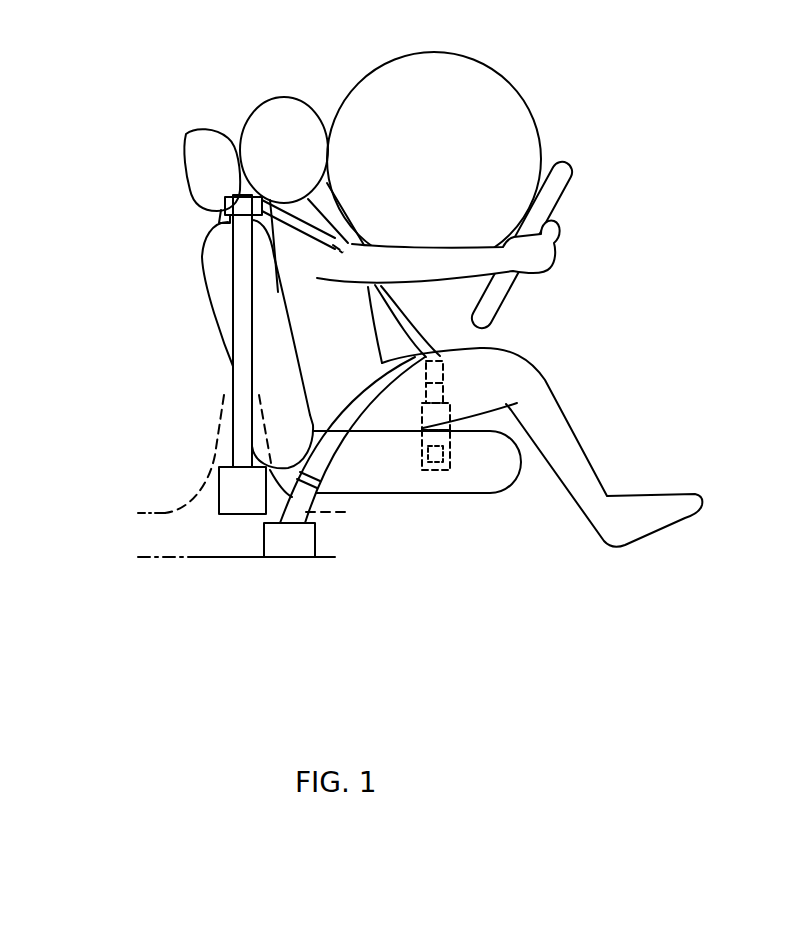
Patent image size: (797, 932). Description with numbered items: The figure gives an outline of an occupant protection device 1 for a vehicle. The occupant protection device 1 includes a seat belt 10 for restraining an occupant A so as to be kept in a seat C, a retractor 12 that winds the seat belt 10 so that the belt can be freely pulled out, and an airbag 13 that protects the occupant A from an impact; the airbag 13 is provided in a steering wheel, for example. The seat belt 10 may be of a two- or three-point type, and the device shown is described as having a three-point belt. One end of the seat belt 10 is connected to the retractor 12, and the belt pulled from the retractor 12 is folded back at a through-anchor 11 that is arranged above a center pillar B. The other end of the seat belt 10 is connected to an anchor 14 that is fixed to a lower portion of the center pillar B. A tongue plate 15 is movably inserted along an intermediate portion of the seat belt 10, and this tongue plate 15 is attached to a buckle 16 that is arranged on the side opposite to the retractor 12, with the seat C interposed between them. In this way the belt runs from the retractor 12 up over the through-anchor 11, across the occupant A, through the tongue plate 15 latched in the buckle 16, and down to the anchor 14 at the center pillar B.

The occupant protection device 1 is at (207, 422).
The seat belt 10 is at (233, 325).
The through-anchor 11 is at (224, 197).
The retractor 12 is at (219, 478).
The airbag 13 is at (507, 82).
The anchor 14 is at (297, 550).
The tongue plate 15 is at (446, 392).
The buckle 16 is at (435, 470).
The occupant A is at (284, 97).
The center pillar B is at (180, 558).
The seat C is at (207, 277).